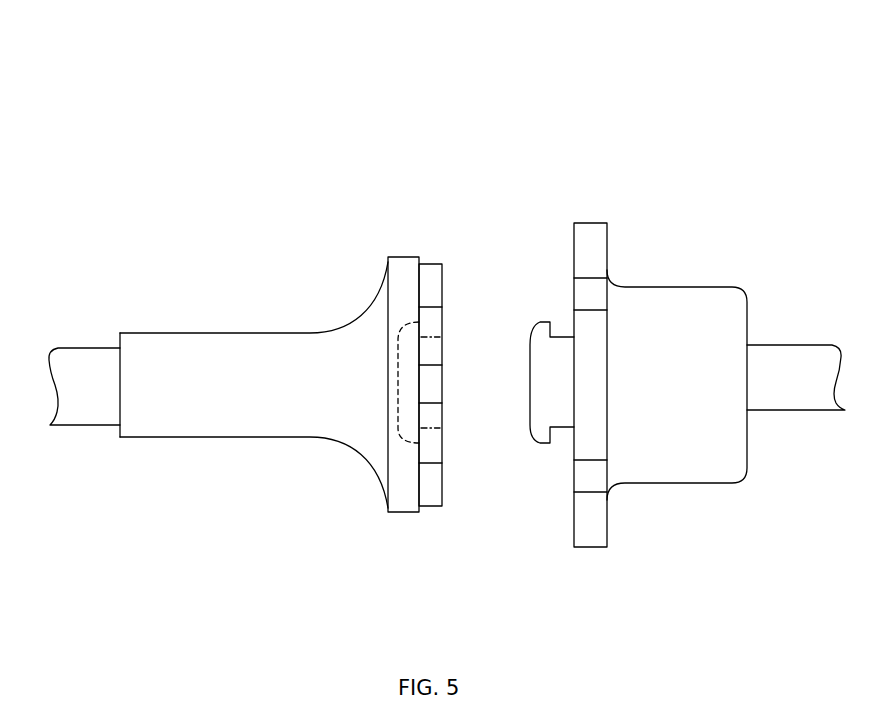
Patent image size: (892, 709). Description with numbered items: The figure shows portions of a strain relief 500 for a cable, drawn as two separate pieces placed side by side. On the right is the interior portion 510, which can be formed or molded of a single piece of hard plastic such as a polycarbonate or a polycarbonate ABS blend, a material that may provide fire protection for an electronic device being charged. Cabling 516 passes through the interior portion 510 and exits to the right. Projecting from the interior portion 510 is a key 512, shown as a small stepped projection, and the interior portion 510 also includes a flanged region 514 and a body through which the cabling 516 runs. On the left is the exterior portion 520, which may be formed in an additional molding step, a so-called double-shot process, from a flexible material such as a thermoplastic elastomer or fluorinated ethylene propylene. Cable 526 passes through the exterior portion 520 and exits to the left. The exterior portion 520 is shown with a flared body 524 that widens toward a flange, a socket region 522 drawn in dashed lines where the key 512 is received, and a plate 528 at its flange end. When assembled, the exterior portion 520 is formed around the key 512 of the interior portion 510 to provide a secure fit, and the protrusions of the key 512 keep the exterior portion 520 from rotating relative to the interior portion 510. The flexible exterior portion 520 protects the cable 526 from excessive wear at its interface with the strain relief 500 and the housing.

The strain relief 500 is at (368, 109).
The interior portion 510 is at (677, 243).
The key 512 is at (545, 445).
The receptacle housing 514 is at (683, 485).
The cabling 516 is at (815, 412).
The exterior portion 520 is at (237, 299).
The socket contact 522 is at (398, 440).
The plug housing 524 is at (227, 433).
The cable 526 is at (80, 427).
The flange plate 528 is at (428, 506).